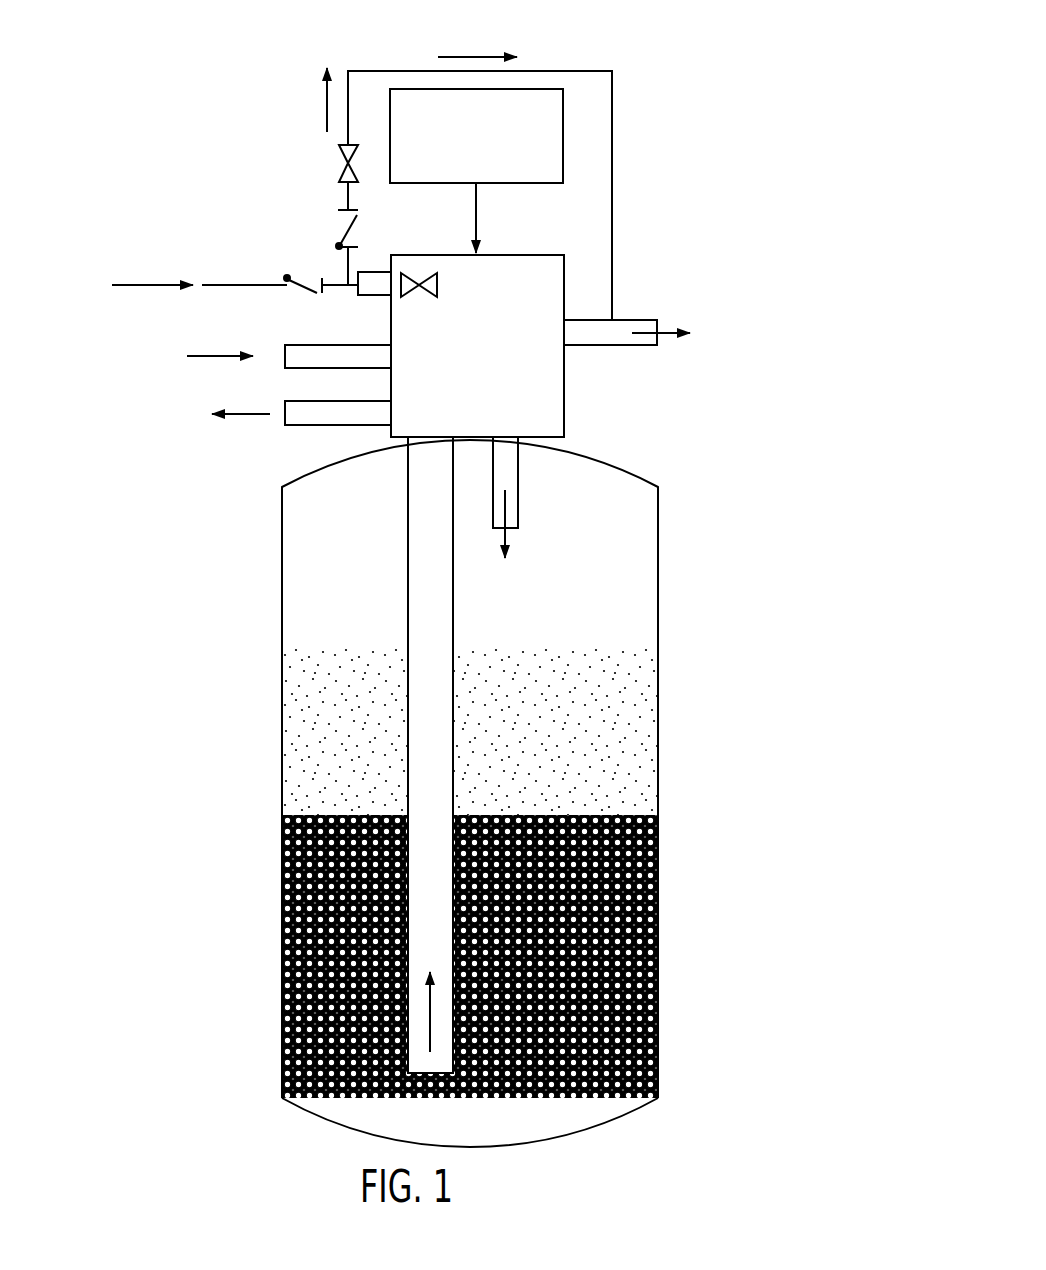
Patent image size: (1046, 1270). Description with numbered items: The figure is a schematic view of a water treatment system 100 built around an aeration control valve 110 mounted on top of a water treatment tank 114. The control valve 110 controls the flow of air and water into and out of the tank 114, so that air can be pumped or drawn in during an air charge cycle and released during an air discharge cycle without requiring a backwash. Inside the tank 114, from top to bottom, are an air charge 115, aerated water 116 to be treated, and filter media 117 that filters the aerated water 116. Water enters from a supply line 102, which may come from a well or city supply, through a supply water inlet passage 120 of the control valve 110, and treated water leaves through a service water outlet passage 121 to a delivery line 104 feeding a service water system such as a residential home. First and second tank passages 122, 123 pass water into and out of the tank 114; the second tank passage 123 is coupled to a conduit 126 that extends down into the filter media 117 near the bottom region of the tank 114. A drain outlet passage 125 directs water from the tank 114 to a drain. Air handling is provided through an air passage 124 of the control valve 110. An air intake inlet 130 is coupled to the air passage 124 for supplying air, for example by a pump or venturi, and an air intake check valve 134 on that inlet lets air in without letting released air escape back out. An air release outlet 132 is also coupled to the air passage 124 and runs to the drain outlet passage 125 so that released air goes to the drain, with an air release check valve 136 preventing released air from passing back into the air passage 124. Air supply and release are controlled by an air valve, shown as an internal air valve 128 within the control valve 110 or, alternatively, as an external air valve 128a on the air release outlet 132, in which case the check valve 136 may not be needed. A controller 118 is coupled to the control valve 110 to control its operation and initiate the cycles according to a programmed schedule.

The water treatment system 100 is at (664, 100).
The supply line 102 is at (225, 358).
The delivery line 104 is at (240, 418).
The aeration control valve 110 is at (540, 255).
The water treatment tank 114 is at (282, 518).
The air charge 115 is at (307, 590).
The aerated water 116 is at (305, 740).
The filter media 117 is at (302, 952).
The controller 118 is at (430, 184).
The supply water inlet passage 120 is at (343, 353).
The service water outlet passage 121 is at (298, 416).
The first tank passage 122 is at (510, 465).
The second tank passage 123 is at (420, 478).
The air passage 124 is at (378, 283).
The drain outlet passage 125 is at (593, 335).
The conduit 126 is at (455, 810).
The internal air valve 128 is at (437, 284).
The external air valve 128a is at (340, 170).
The air intake inlet 130 is at (222, 287).
The air release outlet 132 is at (383, 71).
The air intake check valve 134 is at (297, 290).
The air release check valve 136 is at (340, 240).